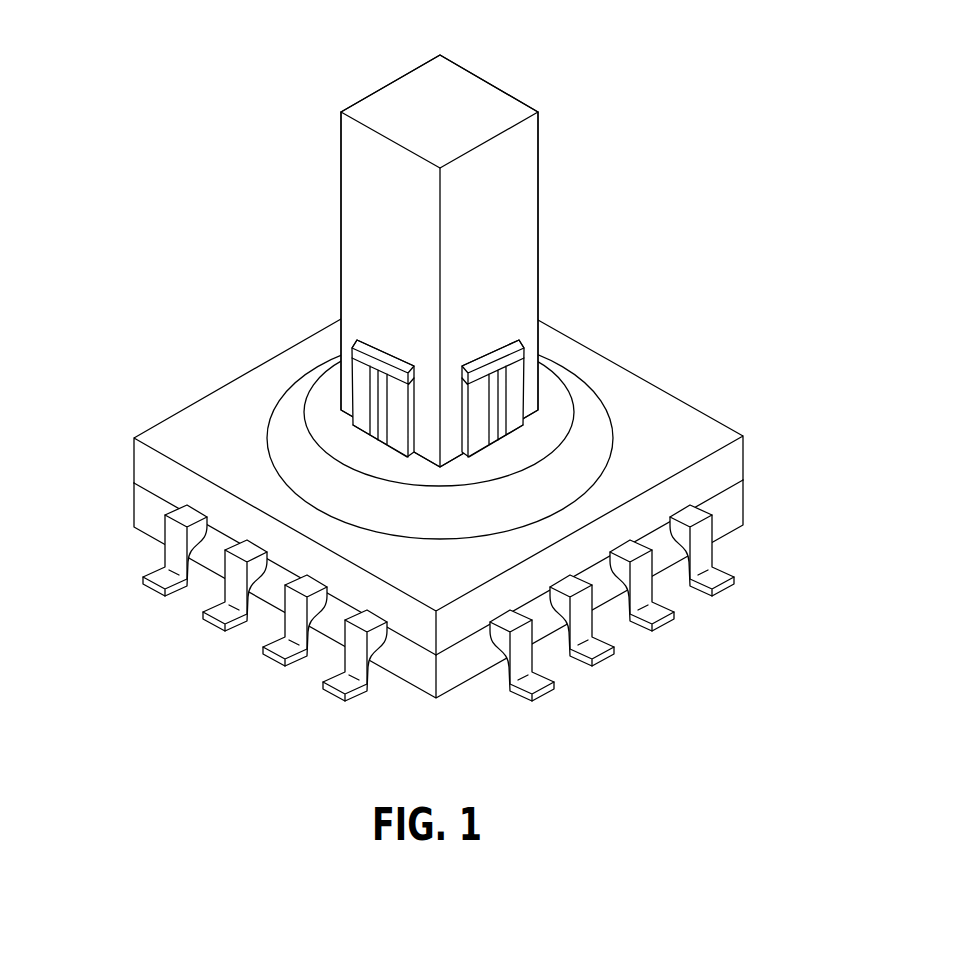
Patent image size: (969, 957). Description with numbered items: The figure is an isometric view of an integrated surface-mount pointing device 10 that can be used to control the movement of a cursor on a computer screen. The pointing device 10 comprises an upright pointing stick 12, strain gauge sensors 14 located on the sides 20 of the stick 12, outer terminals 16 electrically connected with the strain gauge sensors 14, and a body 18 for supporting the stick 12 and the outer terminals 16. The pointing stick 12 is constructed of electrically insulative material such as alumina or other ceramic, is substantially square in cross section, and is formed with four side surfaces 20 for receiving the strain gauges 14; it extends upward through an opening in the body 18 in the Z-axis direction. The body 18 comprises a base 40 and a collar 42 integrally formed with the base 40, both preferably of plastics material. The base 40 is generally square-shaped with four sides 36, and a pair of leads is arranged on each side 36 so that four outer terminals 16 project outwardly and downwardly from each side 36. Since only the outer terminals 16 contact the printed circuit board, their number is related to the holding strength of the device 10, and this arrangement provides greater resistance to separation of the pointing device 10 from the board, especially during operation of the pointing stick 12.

The integrated surface-mount pointing device 10 is at (470, 385).
The pointing stick 12 is at (394, 261).
The strain gauge sensors 14 is at (350, 363).
The outer terminals 16 is at (340, 680).
The body 18 is at (470, 515).
The side surfaces 20 is at (368, 237).
The sides of the body 36 is at (708, 482).
The base 40 is at (712, 437).
The collar 42 is at (580, 428).